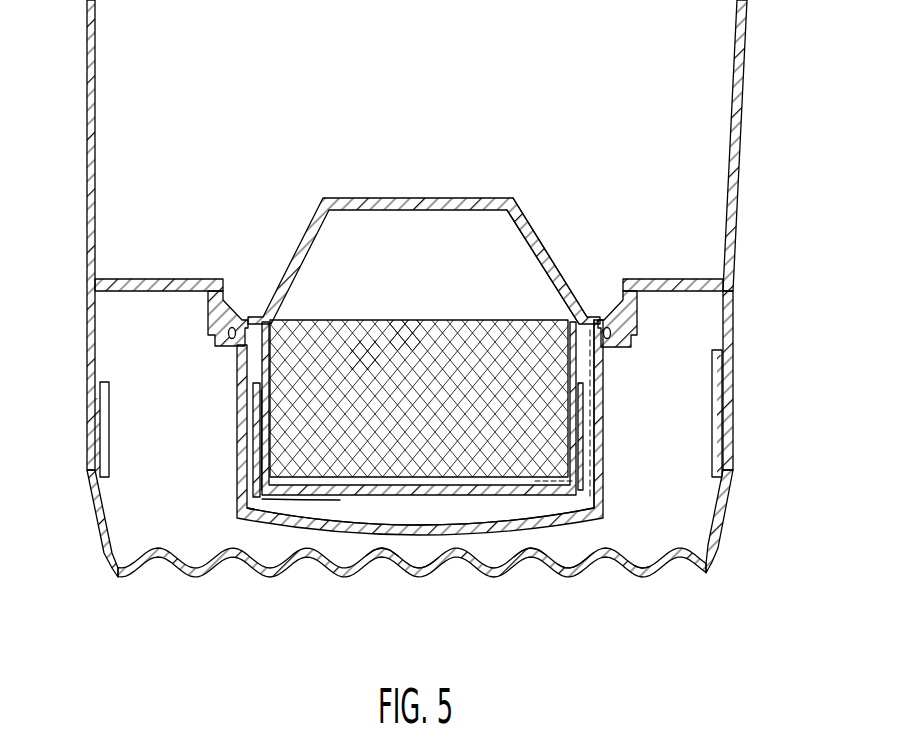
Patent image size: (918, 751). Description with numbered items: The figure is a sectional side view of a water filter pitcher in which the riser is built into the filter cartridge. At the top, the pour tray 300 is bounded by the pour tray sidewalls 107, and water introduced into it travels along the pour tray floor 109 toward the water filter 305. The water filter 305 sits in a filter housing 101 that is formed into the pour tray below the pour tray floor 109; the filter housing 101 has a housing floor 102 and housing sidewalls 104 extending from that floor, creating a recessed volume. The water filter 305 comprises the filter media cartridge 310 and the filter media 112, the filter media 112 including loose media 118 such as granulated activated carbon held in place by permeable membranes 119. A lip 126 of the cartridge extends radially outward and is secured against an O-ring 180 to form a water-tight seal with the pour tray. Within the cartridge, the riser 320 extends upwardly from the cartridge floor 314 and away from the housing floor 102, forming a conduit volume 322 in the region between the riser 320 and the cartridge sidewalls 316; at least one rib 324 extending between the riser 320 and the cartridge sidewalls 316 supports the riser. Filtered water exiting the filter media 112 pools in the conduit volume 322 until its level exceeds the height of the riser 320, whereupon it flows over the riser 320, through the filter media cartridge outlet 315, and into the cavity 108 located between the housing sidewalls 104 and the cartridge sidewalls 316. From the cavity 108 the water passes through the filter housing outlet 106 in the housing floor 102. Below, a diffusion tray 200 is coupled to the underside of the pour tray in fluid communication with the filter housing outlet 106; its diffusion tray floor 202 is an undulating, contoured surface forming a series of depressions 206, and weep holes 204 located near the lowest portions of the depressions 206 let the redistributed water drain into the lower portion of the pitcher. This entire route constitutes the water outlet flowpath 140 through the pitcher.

The pour tray 300 is at (757, 113).
The water filter 305 is at (491, 186).
The filter media cartridge 310 is at (548, 238).
The pour tray sidewalls 107 is at (97, 44).
The pour tray floor 109 is at (140, 278).
The lip 126 is at (214, 278).
The O-ring 180 is at (232, 327).
The rib 324 is at (600, 318).
The filter media 112 is at (361, 360).
The loose media 118 is at (397, 342).
The permeable membranes 119 is at (448, 318).
The cartridge sidewalls 316 is at (253, 372).
The riser 320 is at (253, 418).
The conduit volume 322 is at (258, 448).
The filter media cartridge outlet 315 is at (581, 380).
The cavity 108 is at (596, 422).
The housing sidewalls 104 is at (456, 376).
The filter housing 101 is at (438, 467).
The water outlet flowpath 140 is at (588, 530).
The filter housing outlet 106 is at (248, 520).
The cartridge floor 314 is at (285, 500).
The depressions 206 is at (358, 575).
The housing floor 102 is at (431, 562).
The weep holes 204 is at (569, 574).
The diffusion tray floor 202 is at (677, 577).
The diffusion tray 200 is at (110, 575).